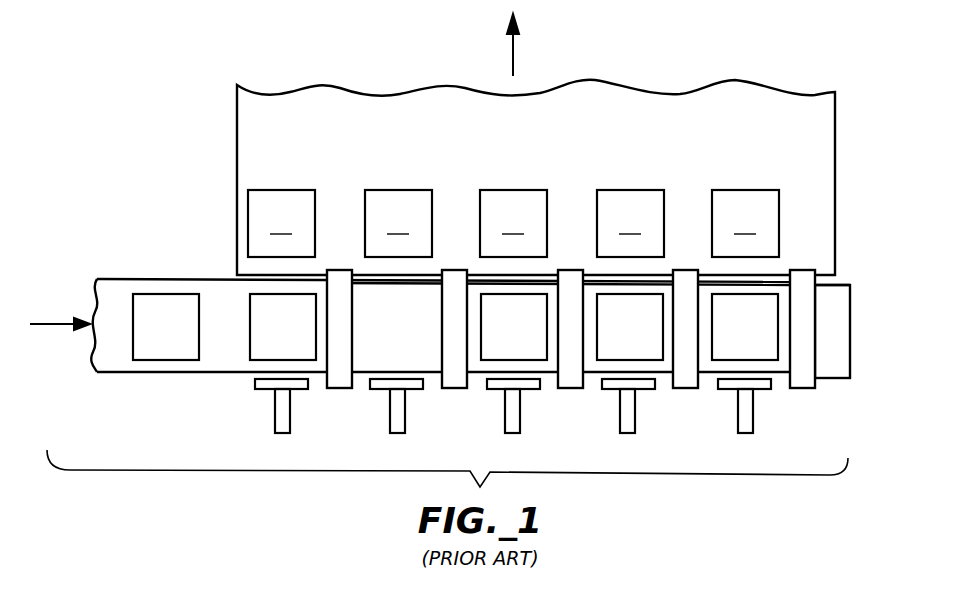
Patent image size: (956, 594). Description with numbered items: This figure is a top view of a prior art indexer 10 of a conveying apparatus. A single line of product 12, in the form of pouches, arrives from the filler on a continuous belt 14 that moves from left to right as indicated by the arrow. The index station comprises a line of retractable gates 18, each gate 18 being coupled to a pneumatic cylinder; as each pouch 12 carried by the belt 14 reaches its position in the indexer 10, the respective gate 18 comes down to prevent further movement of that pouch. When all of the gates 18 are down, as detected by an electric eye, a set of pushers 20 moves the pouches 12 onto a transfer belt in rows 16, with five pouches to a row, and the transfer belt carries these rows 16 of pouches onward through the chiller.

The indexer 10 is at (160, 400).
The product 12 is at (254, 311).
The continuous belt 14 is at (225, 373).
The rows 16 is at (800, 76).
The retractable gates 18 is at (577, 389).
The pushers 20 is at (286, 421).